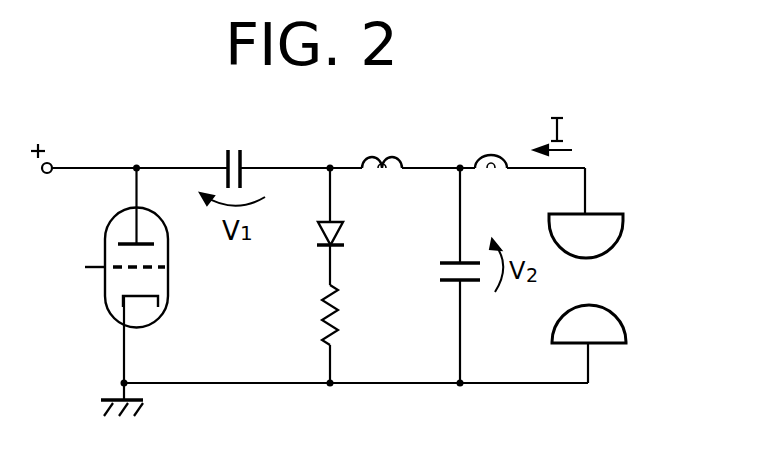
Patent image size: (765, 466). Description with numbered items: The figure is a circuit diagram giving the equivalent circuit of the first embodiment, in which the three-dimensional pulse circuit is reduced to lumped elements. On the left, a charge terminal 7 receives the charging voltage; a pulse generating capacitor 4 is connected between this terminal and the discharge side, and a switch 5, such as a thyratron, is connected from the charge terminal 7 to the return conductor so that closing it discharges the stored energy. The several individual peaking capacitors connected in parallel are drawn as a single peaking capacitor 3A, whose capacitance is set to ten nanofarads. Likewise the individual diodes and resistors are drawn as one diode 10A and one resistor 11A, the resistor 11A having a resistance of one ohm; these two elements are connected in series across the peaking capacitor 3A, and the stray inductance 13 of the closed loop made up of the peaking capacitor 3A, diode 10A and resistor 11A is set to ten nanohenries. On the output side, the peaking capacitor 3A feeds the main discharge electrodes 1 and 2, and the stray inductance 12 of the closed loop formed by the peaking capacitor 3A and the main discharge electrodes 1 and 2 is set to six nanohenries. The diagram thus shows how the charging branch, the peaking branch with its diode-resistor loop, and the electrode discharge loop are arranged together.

The charge terminal 7 is at (47, 174).
The switch 5 is at (100, 292).
The pulse generating capacitor 4 is at (238, 140).
The stray inductance Ld 13 is at (378, 158).
The stray inductance L2 12 is at (490, 158).
The main discharge electrode 1 is at (628, 213).
The main discharge electrode 2 is at (628, 333).
The diode 10A is at (322, 249).
The resistor 11A is at (340, 312).
The peaking capacitor 3A is at (455, 264).